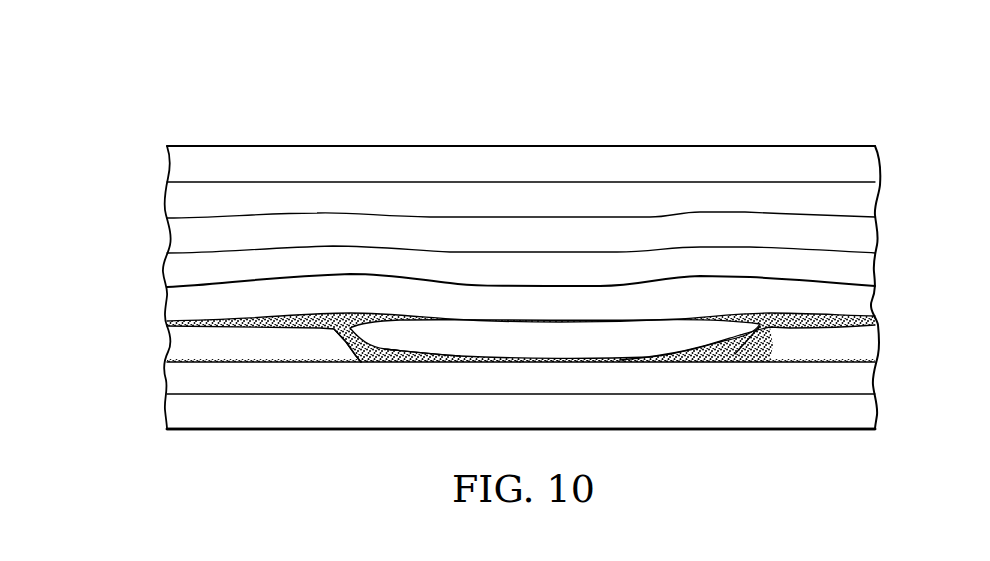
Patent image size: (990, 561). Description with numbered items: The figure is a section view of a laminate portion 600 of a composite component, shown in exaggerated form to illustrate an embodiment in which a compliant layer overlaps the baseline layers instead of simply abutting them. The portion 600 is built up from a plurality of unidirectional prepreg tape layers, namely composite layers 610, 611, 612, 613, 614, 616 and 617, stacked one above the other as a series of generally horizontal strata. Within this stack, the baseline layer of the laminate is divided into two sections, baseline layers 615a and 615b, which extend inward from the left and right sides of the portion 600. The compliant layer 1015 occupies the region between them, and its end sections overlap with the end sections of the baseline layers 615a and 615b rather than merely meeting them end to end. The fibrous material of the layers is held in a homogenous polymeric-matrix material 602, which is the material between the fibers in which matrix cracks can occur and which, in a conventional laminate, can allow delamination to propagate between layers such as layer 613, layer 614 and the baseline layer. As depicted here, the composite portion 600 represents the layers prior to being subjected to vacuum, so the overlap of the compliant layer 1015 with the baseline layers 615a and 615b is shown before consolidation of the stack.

The portion 600 is at (156, 90).
The composite layer 610 is at (877, 164).
The composite layer 611 is at (877, 201).
The composite layer 612 is at (877, 232).
The composite layer 613 is at (877, 268).
The composite layer 614 is at (877, 308).
The baseline layer 615a is at (178, 344).
The baseline layer 615b is at (863, 342).
The composite layer 616 is at (877, 380).
The composite layer 617 is at (877, 418).
The polymeric-matrix material 602 is at (380, 355).
The compliant layer 1015 is at (697, 333).